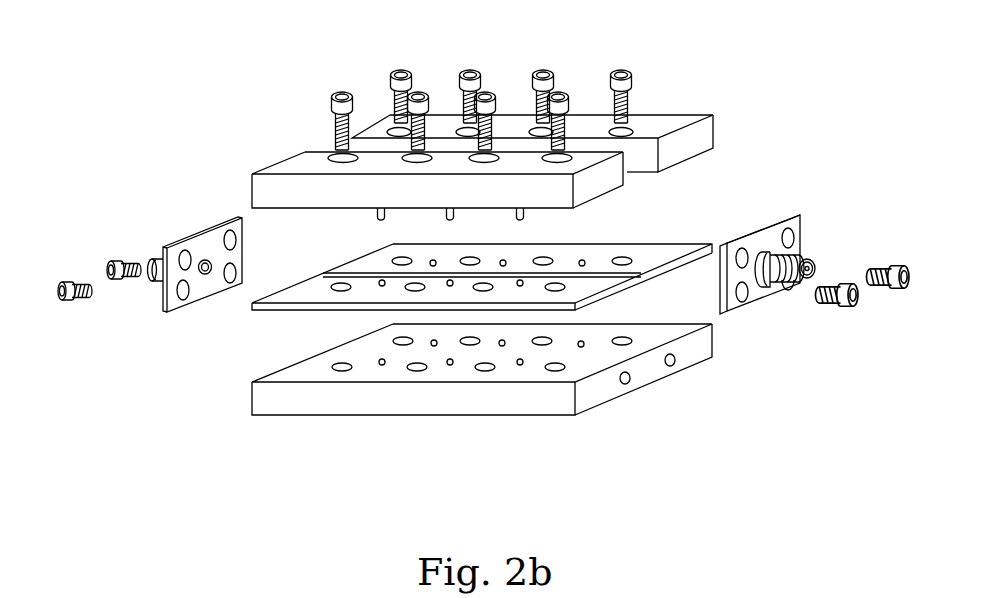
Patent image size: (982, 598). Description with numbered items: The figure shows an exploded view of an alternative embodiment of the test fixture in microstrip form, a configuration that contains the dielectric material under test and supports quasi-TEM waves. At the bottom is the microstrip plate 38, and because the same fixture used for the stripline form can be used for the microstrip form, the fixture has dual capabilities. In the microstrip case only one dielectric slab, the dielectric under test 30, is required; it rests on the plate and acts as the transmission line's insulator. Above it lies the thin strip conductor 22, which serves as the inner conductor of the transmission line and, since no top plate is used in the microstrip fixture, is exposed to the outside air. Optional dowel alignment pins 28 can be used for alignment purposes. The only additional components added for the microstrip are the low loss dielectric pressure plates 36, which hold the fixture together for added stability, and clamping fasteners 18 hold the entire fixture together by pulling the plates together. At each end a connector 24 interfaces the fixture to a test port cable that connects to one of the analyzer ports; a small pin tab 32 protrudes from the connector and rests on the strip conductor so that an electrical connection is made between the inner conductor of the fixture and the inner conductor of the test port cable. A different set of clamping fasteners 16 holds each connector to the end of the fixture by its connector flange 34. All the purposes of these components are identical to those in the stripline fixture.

The clamping fastener 16 is at (60, 283).
The clamping fastener 18 is at (396, 68).
The strip conductor 22 is at (633, 273).
The connector 24 is at (806, 278).
The dowel alignment pin 28 is at (378, 212).
The dielectric under test 30 is at (254, 306).
The pin tab 32 is at (214, 267).
The connector flange 34 is at (230, 241).
The low loss dielectric pressure plate 36 is at (668, 128).
The microstrip plate 38 is at (605, 388).